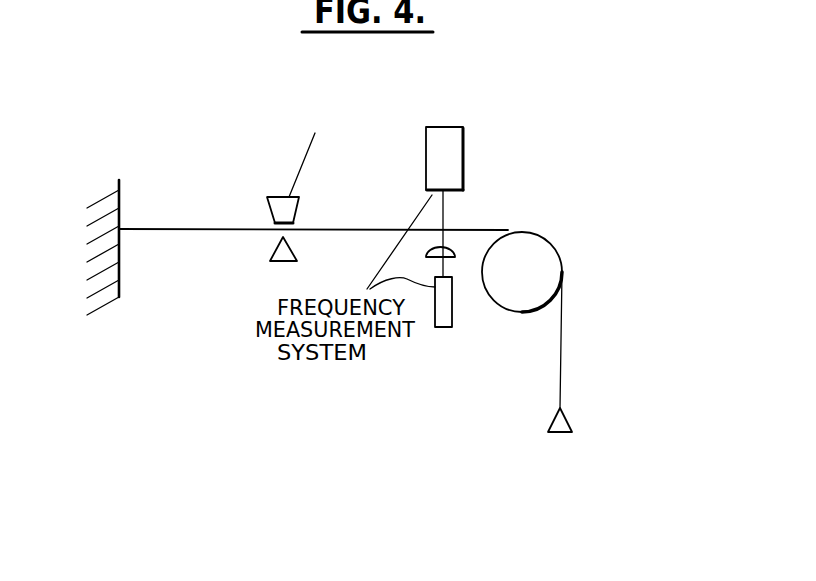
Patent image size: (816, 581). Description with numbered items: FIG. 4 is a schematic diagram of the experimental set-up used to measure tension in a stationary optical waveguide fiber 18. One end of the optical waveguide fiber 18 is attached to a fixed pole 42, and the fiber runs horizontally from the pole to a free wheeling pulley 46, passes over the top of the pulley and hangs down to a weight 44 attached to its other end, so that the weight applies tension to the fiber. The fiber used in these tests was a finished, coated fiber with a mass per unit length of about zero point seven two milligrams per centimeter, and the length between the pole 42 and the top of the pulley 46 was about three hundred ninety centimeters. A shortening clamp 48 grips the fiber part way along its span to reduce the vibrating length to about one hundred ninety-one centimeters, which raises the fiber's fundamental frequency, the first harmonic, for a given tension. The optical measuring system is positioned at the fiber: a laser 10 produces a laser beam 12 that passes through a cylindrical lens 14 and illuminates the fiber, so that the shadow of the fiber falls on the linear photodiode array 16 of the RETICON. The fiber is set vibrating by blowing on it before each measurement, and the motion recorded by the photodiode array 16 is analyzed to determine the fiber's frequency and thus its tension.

The laser 10 is at (443, 327).
The laser beam 12 is at (443, 207).
The cylindrical lens 14 is at (455, 252).
The linear photodiode array 16 is at (465, 140).
The optical waveguide fiber 18 is at (169, 229).
The fixed pole 42 is at (119, 283).
The weight 44 is at (558, 435).
The free wheeling pulley 46 is at (542, 257).
The clamp 48 is at (267, 205).